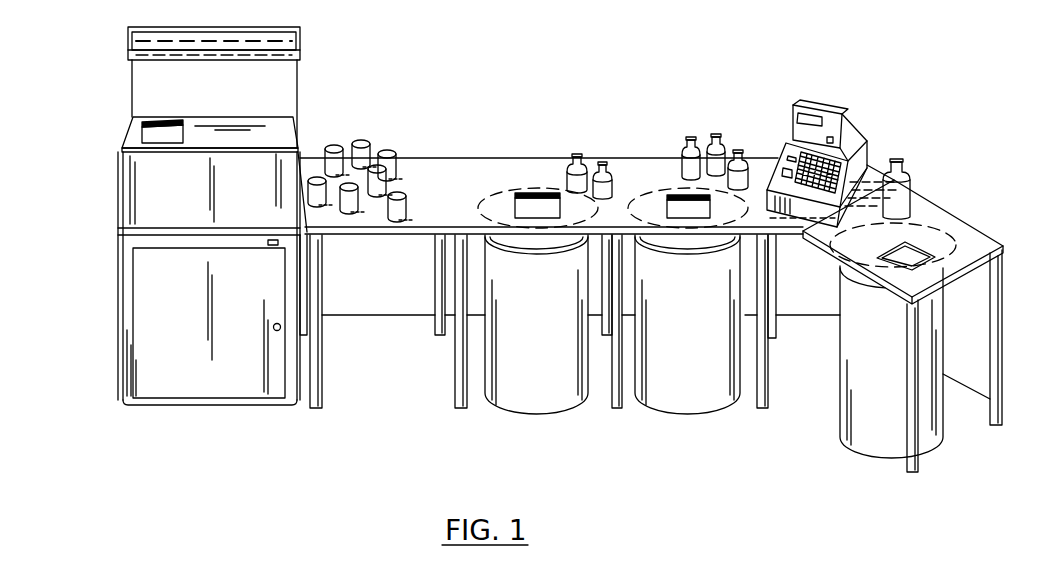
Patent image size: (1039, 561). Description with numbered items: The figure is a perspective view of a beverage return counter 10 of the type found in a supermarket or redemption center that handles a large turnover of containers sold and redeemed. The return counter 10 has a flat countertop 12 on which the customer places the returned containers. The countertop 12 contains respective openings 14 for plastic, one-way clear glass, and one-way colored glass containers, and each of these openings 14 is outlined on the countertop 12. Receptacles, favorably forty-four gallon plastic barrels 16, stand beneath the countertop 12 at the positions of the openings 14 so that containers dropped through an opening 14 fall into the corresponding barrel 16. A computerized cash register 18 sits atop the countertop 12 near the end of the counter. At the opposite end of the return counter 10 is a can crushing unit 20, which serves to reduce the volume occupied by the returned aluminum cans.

The beverage return counter 10 is at (704, 89).
The flat countertop 12 is at (542, 162).
The openings 14 is at (524, 190).
The plastic barrels 16 is at (538, 404).
The computerized cash register 18 is at (860, 140).
The can crushing unit 20 is at (320, 115).